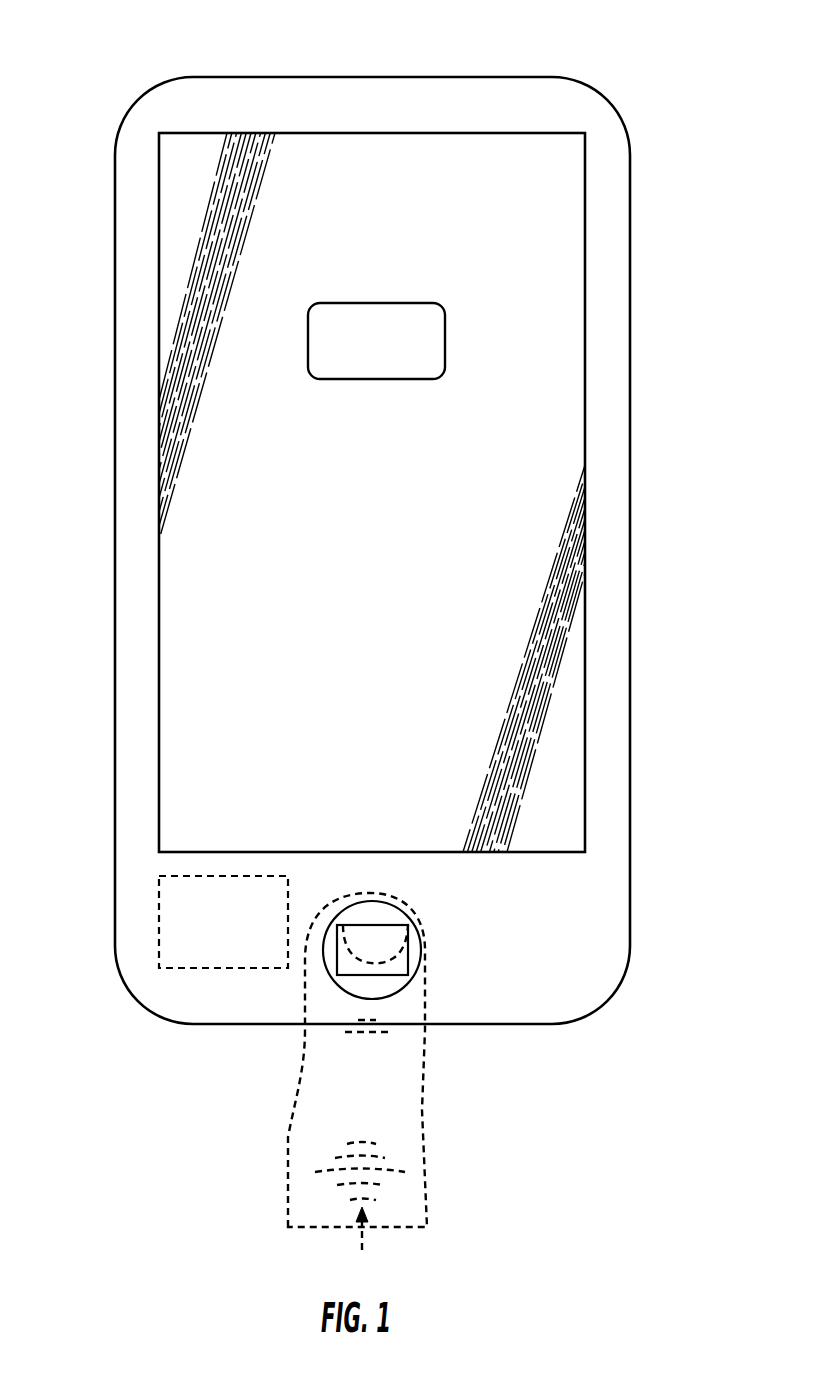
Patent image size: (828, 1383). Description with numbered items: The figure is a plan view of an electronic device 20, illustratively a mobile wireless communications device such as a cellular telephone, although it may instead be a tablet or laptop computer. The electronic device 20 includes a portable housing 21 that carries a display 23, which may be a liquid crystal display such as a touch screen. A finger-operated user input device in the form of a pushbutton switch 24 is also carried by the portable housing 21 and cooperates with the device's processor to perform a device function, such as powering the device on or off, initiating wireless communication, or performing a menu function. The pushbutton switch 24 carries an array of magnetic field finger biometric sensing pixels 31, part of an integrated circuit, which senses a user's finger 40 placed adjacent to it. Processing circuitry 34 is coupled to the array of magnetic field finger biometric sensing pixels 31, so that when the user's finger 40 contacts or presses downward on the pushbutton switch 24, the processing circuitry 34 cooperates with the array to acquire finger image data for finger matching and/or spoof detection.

The electronic device 20 is at (373, 521).
The portable housing 21 is at (115, 262).
The display 23 is at (160, 310).
The pushbutton switch 24 is at (408, 983).
The array of magnetic field finger biometric sensing pixels 31 is at (408, 960).
The processing circuitry 34 is at (158, 893).
The user's finger 40 is at (300, 1062).